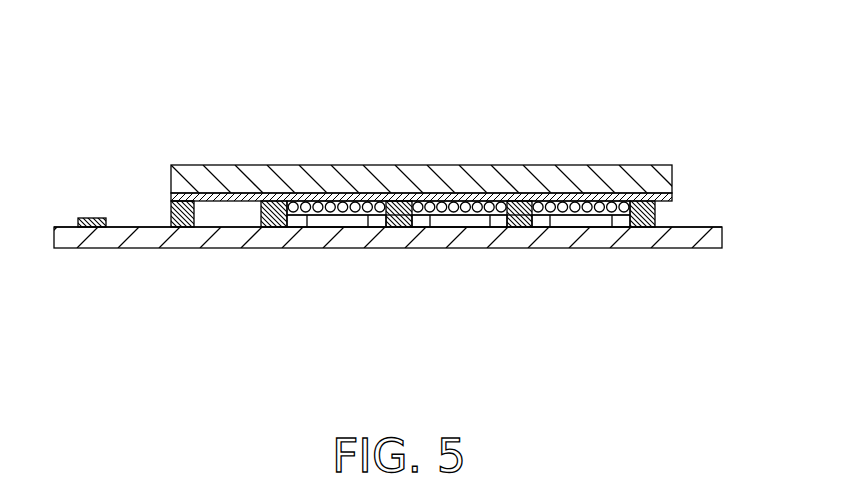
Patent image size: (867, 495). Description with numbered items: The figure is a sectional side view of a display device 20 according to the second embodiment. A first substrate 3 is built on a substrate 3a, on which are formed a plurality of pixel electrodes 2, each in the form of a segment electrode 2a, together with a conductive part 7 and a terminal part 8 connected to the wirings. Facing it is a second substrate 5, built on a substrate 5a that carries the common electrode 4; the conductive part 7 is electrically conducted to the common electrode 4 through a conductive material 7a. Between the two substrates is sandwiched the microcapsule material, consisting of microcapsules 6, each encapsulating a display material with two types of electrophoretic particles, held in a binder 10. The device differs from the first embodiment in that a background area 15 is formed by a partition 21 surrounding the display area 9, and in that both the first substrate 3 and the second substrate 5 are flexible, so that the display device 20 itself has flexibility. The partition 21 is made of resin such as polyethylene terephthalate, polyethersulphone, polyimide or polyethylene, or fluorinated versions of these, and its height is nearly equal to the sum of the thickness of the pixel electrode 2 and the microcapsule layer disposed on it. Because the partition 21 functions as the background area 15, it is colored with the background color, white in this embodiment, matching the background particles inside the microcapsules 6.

The pixel electrode 2 is at (458, 264).
The segment electrode 2a is at (338, 282).
The first substrate 3 is at (218, 250).
The substrate 3a is at (130, 228).
The common electrode 4 is at (217, 190).
The second substrate 5 is at (193, 121).
The substrate 5a is at (282, 196).
The microcapsule 6 is at (436, 207).
The conductive part 7 is at (182, 228).
The conductive material 7a is at (169, 207).
The terminal part 8 is at (92, 218).
The display area 9 is at (320, 317).
The binder 10 is at (492, 207).
The background area 15 is at (387, 62).
The display device 20 is at (642, 135).
The partition 21 is at (274, 200).